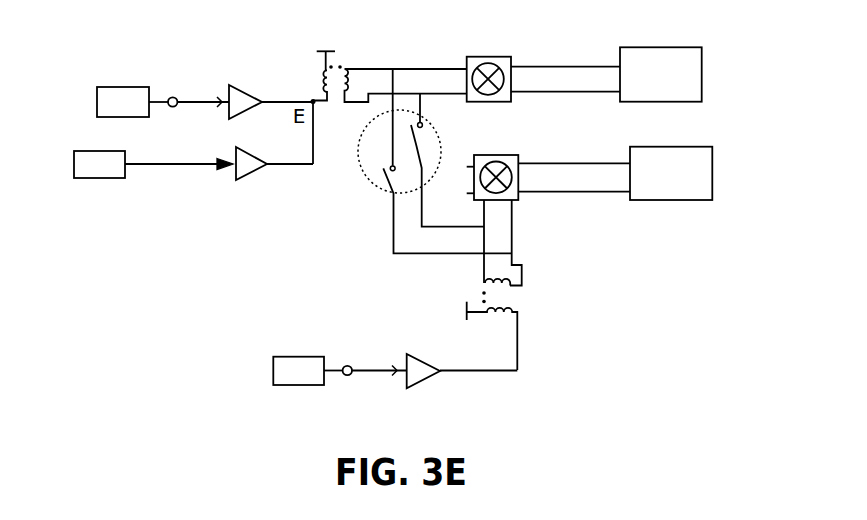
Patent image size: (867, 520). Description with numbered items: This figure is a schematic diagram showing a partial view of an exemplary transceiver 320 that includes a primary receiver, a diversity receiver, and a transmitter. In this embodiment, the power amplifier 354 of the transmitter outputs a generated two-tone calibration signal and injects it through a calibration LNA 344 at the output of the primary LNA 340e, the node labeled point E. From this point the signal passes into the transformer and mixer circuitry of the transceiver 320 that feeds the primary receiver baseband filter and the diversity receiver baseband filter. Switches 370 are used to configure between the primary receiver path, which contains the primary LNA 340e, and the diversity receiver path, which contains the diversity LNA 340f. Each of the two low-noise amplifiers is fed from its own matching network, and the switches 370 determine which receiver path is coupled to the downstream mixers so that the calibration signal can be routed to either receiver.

The transceiver 320 is at (643, 320).
The primary LNA 340e is at (219, 78).
The diversity LNA 340f is at (390, 344).
The calibration LNA 344 is at (240, 212).
The power amplifier 354 is at (120, 212).
The switches 370 is at (333, 210).